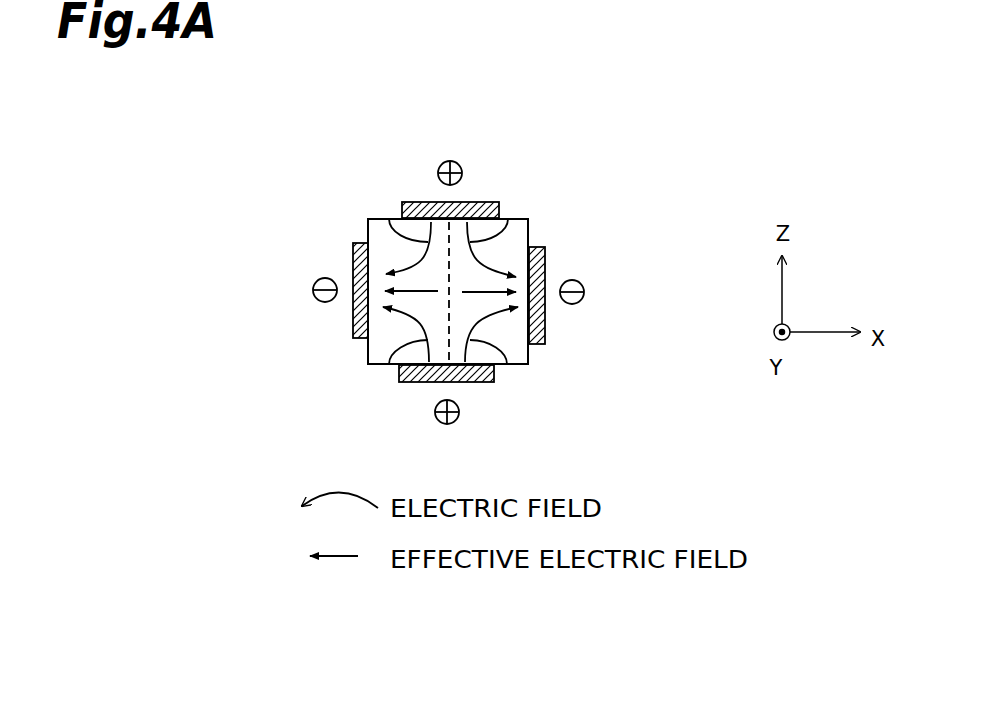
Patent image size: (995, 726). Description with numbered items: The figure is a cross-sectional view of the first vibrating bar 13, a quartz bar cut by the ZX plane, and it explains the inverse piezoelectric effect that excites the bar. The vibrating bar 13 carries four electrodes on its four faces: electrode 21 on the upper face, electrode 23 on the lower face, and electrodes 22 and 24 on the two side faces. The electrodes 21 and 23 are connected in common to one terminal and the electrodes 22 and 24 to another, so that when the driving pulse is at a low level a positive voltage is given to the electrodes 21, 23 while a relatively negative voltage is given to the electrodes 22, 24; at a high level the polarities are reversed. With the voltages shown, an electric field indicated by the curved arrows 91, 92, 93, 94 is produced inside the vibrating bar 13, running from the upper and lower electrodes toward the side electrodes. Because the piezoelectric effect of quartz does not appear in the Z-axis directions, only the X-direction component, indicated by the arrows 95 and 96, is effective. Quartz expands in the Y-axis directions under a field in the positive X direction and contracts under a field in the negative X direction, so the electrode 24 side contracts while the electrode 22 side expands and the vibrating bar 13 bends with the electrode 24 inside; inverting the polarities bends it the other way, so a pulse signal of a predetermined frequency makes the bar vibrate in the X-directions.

The first vibrating bar 13 is at (523, 353).
The electrode 21 is at (497, 202).
The electrode 22 is at (547, 258).
The electrode 23 is at (488, 383).
The electrode 24 is at (352, 328).
The arrow indicating electric field 91 is at (500, 219).
The arrow indicating electric field 92 is at (390, 219).
The arrow indicating electric field 93 is at (507, 367).
The arrow indicating electric field 94 is at (392, 365).
The arrow indicating effective electric field 95 is at (513, 293).
The arrow indicating effective electric field 96 is at (384, 290).